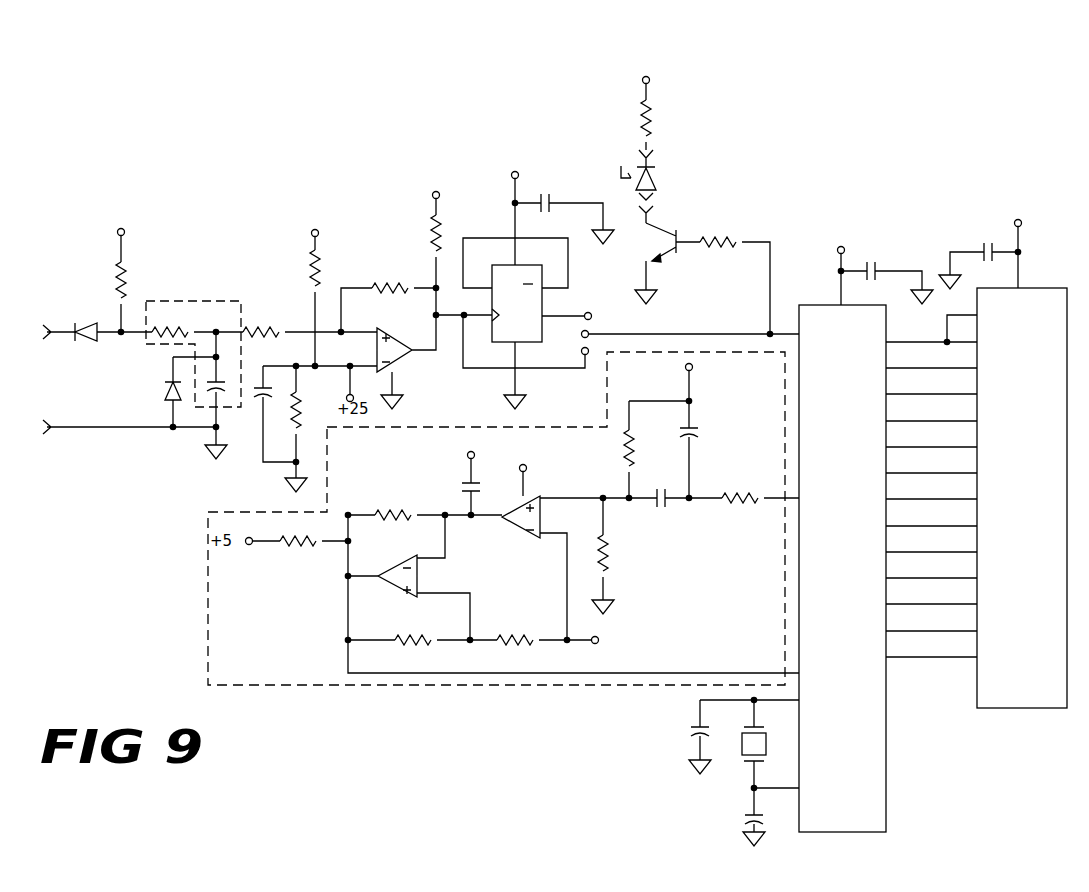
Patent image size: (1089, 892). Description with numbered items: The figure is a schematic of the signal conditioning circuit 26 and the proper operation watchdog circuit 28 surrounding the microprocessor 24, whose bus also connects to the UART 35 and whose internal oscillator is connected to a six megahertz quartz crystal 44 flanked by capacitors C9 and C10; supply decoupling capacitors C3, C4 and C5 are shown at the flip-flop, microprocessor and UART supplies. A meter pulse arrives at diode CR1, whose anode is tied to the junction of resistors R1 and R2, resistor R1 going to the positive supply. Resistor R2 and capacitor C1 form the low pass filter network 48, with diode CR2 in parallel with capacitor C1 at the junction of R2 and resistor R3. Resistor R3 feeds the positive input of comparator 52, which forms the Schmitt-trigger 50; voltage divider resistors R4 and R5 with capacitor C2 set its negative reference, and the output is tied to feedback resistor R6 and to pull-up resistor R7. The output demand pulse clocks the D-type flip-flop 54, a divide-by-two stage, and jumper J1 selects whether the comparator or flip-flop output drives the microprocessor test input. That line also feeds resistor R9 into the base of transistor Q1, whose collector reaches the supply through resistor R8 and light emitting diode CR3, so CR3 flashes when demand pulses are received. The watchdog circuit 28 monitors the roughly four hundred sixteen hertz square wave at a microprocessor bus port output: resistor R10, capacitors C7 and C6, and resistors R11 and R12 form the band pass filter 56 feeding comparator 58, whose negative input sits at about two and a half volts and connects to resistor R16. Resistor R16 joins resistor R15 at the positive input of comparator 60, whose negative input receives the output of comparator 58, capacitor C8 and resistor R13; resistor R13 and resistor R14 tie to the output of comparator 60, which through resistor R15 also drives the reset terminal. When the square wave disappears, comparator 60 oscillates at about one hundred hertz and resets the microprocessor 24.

The diode CR1 is at (111, 322).
The resistor R1 is at (128, 271).
The low pass filter network 48 is at (200, 301).
The resistor R2 is at (197, 322).
The capacitor C1 is at (223, 395).
The diode CR2 is at (175, 393).
The resistor R3 is at (310, 322).
The voltage divider resistor R4 is at (319, 288).
The Schmitt-trigger 50 is at (380, 245).
The signal conditioning circuit 26 is at (397, 197).
The resistor R6 is at (390, 299).
The resistor R7 is at (443, 242).
The comparator 52 is at (387, 333).
The capacitor C2 is at (275, 414).
The voltage divider resistor R5 is at (303, 427).
The proper operation watchdog circuit 28 is at (425, 427).
The capacitor C3 is at (563, 209).
The D-type flip-flop 54 is at (532, 343).
The jumper J1 is at (631, 337).
The resistor R8 is at (654, 103).
The light emitting diode CR3 is at (654, 186).
The transistor Q1 is at (667, 263).
The resistor R9 is at (735, 276).
The capacitor C4 is at (878, 266).
The microprocessor 24 is at (832, 549).
The capacitor C5 is at (987, 244).
The UART 35 is at (1011, 534).
The band pass filter 56 is at (707, 401).
The capacitor C6 is at (699, 451).
The resistor R11 is at (645, 451).
The capacitor C7 is at (631, 487).
The resistor R10 is at (760, 488).
The resistor R12 is at (616, 556).
The capacitor C8 is at (482, 472).
The resistor R13 is at (425, 506).
The resistor R14 is at (299, 532).
The comparator 60 is at (405, 559).
The comparator 58 is at (531, 538).
The resistor R15 is at (410, 631).
The resistor R16 is at (560, 634).
The capacitor C9 is at (688, 737).
The quartz crystal 44 is at (733, 765).
The capacitor C10 is at (768, 817).